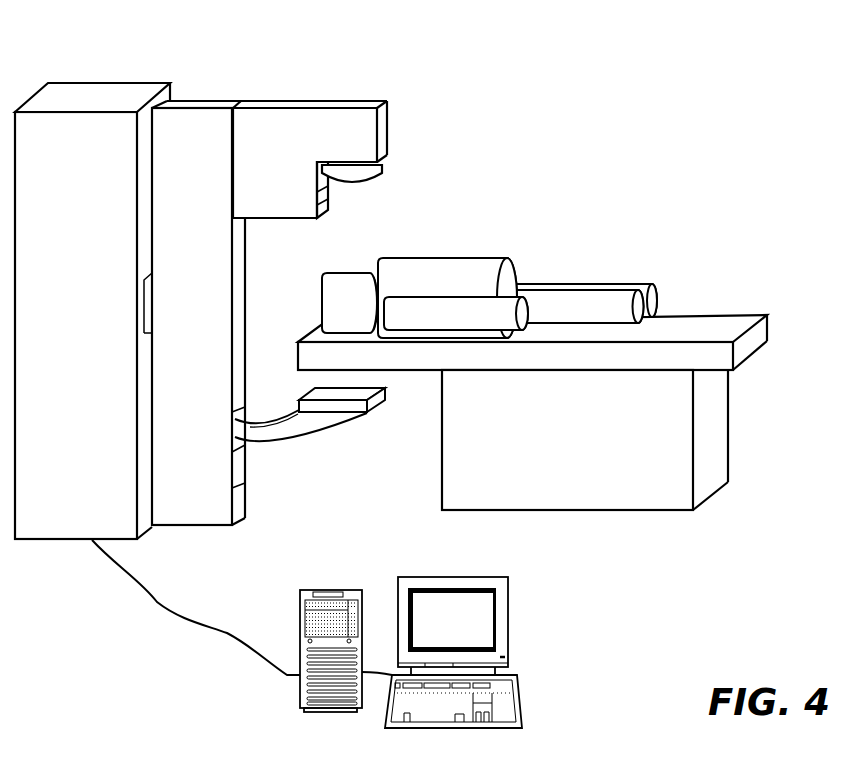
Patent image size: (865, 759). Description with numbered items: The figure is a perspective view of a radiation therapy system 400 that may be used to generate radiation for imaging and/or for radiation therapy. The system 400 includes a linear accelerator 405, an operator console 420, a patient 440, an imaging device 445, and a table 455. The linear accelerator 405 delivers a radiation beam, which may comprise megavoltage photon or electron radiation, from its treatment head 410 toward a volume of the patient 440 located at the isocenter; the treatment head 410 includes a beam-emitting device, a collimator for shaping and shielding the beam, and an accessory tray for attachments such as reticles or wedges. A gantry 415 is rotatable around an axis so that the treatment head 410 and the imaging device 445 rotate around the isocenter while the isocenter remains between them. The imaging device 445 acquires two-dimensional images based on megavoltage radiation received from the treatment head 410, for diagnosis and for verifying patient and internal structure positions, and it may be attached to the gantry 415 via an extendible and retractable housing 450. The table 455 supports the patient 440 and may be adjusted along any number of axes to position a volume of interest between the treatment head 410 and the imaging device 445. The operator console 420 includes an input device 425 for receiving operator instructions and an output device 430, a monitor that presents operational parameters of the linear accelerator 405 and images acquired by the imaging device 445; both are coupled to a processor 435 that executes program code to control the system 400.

The system 400 is at (742, 35).
The linear accelerator 405 is at (213, 287).
The treatment head 410 is at (358, 183).
The gantry 415 is at (213, 103).
The operator console 420 is at (334, 634).
The input device 425 is at (520, 694).
The output device 430 is at (453, 576).
The processor 435 is at (343, 590).
The patient 440 is at (462, 258).
The imaging device 445 is at (387, 401).
The extendible and retractable housing 450 is at (308, 438).
The table 455 is at (742, 323).